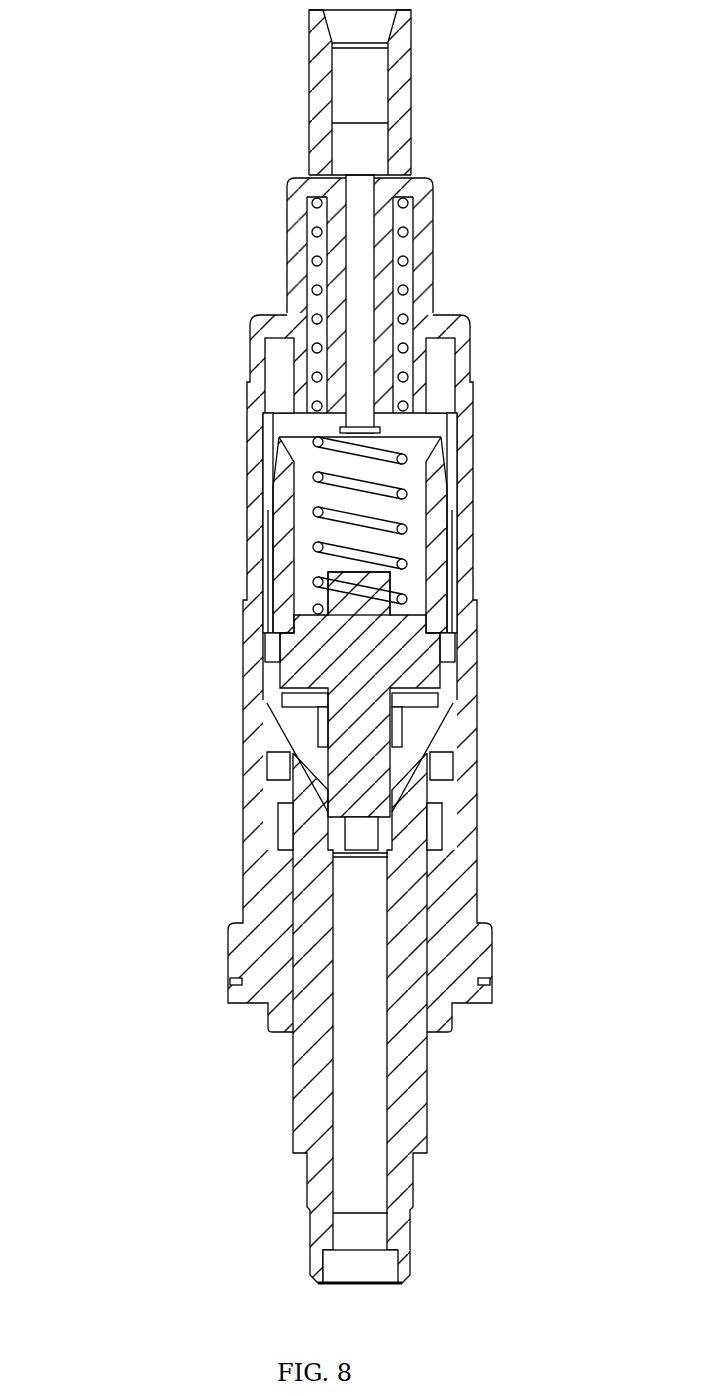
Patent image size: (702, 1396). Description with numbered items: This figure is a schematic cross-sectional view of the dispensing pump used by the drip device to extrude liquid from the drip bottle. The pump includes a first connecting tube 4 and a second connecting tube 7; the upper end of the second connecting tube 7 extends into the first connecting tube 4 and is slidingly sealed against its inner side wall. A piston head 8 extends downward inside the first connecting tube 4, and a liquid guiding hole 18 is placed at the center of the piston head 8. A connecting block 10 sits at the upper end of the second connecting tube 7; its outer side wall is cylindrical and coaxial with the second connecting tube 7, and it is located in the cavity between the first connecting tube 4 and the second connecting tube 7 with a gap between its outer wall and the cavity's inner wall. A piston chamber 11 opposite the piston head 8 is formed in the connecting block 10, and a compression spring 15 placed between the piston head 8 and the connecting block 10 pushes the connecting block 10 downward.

The first connecting tube 4 is at (247, 493).
The second connecting tube 7 is at (310, 1037).
The piston head 8 is at (417, 372).
The connecting block 10 is at (313, 663).
The piston chamber 11 is at (375, 538).
The compression spring 15 is at (403, 495).
The liquid guiding hole 18 is at (357, 290).